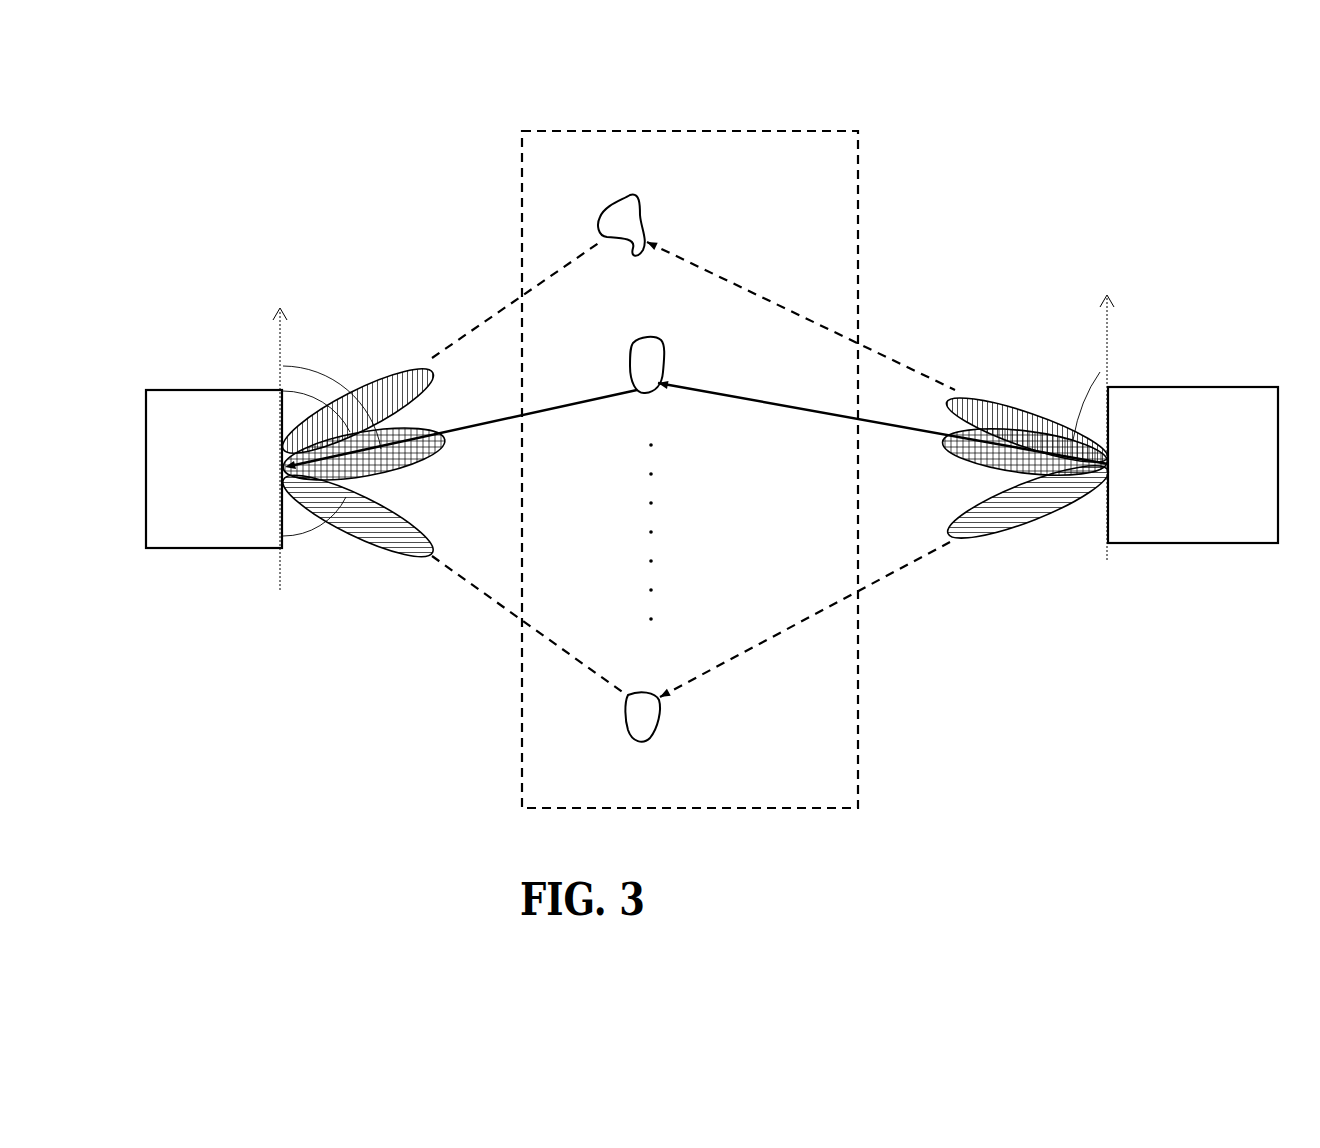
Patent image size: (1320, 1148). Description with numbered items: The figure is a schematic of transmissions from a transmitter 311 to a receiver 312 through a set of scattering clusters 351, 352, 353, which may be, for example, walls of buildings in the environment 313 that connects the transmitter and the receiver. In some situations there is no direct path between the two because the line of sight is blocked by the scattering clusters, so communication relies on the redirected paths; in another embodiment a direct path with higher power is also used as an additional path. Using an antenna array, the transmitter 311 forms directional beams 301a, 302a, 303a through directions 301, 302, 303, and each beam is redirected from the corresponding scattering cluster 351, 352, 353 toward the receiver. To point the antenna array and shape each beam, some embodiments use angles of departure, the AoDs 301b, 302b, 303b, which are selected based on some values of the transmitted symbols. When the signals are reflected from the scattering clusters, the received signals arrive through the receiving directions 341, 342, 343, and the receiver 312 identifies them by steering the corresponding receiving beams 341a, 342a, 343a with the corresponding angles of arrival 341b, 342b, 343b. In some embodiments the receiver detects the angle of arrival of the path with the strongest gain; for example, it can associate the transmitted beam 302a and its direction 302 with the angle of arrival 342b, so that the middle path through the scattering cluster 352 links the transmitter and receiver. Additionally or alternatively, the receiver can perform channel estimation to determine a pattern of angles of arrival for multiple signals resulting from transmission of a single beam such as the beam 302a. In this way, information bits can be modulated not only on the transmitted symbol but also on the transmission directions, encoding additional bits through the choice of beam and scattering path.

The transmitter 311 is at (1185, 387).
The receiver 312 is at (215, 390).
The environment 313 is at (705, 827).
The direction 301 is at (836, 303).
The direction 302 is at (775, 410).
The direction 303 is at (759, 638).
The directional beam 301a is at (984, 398).
The directional beam 302a is at (985, 452).
The directional beam 303a is at (1007, 535).
The AoD 301b is at (1077, 400).
The AoD 302b is at (1094, 634).
The AoD 303b is at (1041, 739).
The receiving direction 341 is at (473, 324).
The receiving direction 342 is at (585, 400).
The receiving direction 343 is at (572, 660).
The receiving beam 341a is at (352, 408).
The receiving beam 342a is at (365, 457).
The receiving beam 343a is at (353, 525).
The angle of arrival 341b is at (310, 398).
The angle of arrival 342b is at (293, 440).
The angle of arrival 343b is at (303, 495).
The scattering cluster 351 is at (640, 215).
The scattering cluster 352 is at (663, 352).
The scattering cluster 353 is at (660, 728).